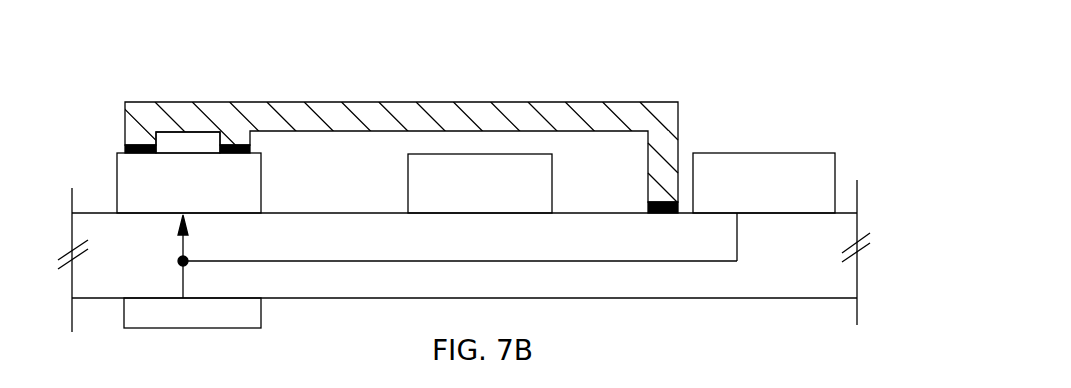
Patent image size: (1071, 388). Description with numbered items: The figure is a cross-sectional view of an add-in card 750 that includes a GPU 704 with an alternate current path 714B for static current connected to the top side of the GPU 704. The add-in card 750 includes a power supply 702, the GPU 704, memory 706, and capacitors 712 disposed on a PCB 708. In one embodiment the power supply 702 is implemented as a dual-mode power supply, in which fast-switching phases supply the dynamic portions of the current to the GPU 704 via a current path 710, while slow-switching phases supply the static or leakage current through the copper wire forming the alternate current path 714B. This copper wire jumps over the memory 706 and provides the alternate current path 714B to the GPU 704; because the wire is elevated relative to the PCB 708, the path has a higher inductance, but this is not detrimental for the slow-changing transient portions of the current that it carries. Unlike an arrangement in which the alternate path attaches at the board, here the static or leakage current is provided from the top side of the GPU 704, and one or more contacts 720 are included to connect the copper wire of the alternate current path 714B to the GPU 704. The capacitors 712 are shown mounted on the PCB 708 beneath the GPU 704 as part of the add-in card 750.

The power supply 702 is at (757, 153).
The GPU 704 is at (261, 188).
The memory 706 is at (552, 177).
The PCB 708 is at (723, 298).
The current path 710 is at (737, 240).
The capacitors 712 is at (261, 316).
The alternate current path 714B is at (460, 102).
The contacts 720 is at (125, 150).
The add-in card 750 is at (629, 74).